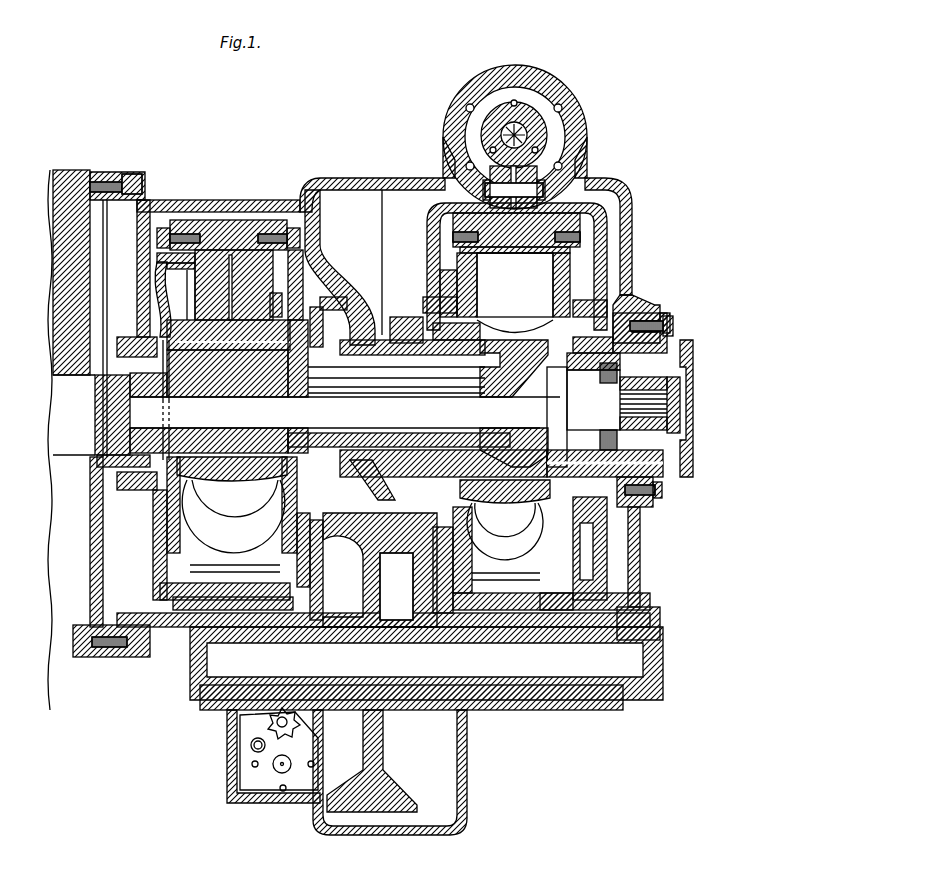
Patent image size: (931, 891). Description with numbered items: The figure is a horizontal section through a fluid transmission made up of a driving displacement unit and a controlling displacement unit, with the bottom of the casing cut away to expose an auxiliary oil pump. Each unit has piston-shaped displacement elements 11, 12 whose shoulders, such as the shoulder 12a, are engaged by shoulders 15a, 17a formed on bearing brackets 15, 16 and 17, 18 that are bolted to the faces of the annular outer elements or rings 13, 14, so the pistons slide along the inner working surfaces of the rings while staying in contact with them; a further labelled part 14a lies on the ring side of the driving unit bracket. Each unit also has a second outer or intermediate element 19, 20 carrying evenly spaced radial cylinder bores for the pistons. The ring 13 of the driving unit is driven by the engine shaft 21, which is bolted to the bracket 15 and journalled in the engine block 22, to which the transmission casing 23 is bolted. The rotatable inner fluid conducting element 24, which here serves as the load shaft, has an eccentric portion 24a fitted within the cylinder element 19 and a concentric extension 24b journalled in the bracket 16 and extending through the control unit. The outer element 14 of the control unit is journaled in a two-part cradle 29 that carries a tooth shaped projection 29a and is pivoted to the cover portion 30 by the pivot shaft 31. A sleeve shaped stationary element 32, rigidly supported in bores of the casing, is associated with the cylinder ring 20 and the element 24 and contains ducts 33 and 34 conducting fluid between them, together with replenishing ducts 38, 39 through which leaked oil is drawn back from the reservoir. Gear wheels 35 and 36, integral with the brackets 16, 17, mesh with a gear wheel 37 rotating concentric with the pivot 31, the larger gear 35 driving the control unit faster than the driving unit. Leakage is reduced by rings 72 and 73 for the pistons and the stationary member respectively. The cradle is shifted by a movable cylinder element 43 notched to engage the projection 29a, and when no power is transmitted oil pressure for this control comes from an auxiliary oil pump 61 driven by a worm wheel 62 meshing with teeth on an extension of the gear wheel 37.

The displacement element 11 is at (217, 263).
The displacement element 12 is at (533, 290).
The shoulder 12a is at (515, 266).
The annular outer element 13 is at (243, 230).
The annular outer element 14 is at (478, 212).
The flange 14a is at (197, 257).
The bearing bracket 15 is at (158, 286).
The shoulder 15a is at (165, 268).
The bearing bracket 16 is at (305, 283).
The bearing bracket 17 is at (456, 258).
The shoulder 17a is at (455, 274).
The bearing bracket 18 is at (582, 252).
The second outer element 19 is at (187, 300).
The second outer element 20 is at (565, 287).
The engine shaft 21 is at (85, 418).
The engine block 22 is at (96, 548).
The transmission casing 23 is at (333, 178).
The inner fluid conducting element 24 is at (464, 413).
The eccentric portion 24a is at (208, 358).
The concentric extension 24b is at (305, 373).
The cradle 29 is at (597, 548).
The tooth shaped projection 29a is at (542, 182).
The cover portion 30 is at (493, 710).
The pivot pin or shaft 31 is at (497, 637).
The stationary element 32 is at (585, 355).
The duct 33 is at (493, 355).
The duct 34 is at (533, 468).
The gear wheel 35 is at (333, 298).
The gear wheel 36 is at (400, 318).
The gear wheel 37 is at (397, 527).
The duct 38 is at (388, 357).
The duct 39 is at (583, 468).
The movable cylinder element 43 is at (547, 132).
The auxiliary oil pump 61 is at (255, 727).
The worm wheel 62 is at (296, 712).
The ring 72 is at (282, 305).
The ring 73 is at (655, 346).